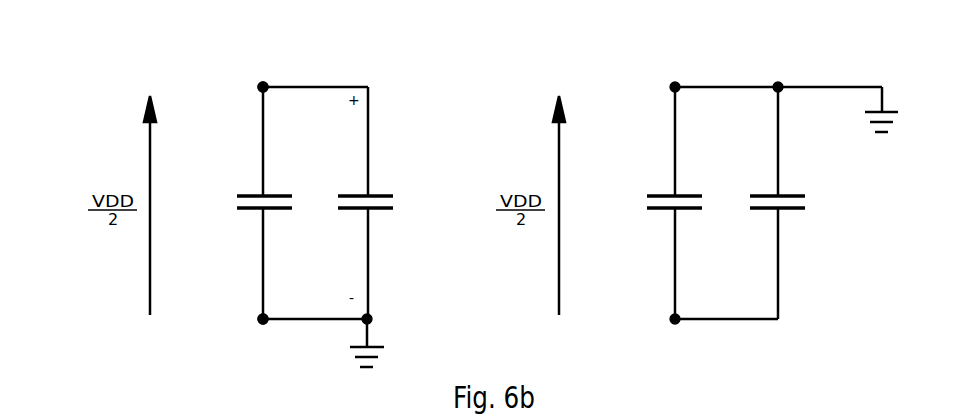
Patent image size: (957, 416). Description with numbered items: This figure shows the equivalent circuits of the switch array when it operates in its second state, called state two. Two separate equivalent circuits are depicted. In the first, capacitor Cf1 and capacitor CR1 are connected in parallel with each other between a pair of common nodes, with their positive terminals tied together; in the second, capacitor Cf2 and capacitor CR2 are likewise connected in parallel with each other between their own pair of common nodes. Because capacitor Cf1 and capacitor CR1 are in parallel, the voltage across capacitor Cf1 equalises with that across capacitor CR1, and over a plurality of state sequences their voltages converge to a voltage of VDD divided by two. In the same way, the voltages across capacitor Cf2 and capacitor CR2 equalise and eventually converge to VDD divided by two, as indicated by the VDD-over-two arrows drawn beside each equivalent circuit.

The capacitor Cf1 is at (246, 195).
The capacitor CR1 is at (387, 195).
The capacitor Cf2 is at (656, 195).
The capacitor CR2 is at (799, 195).